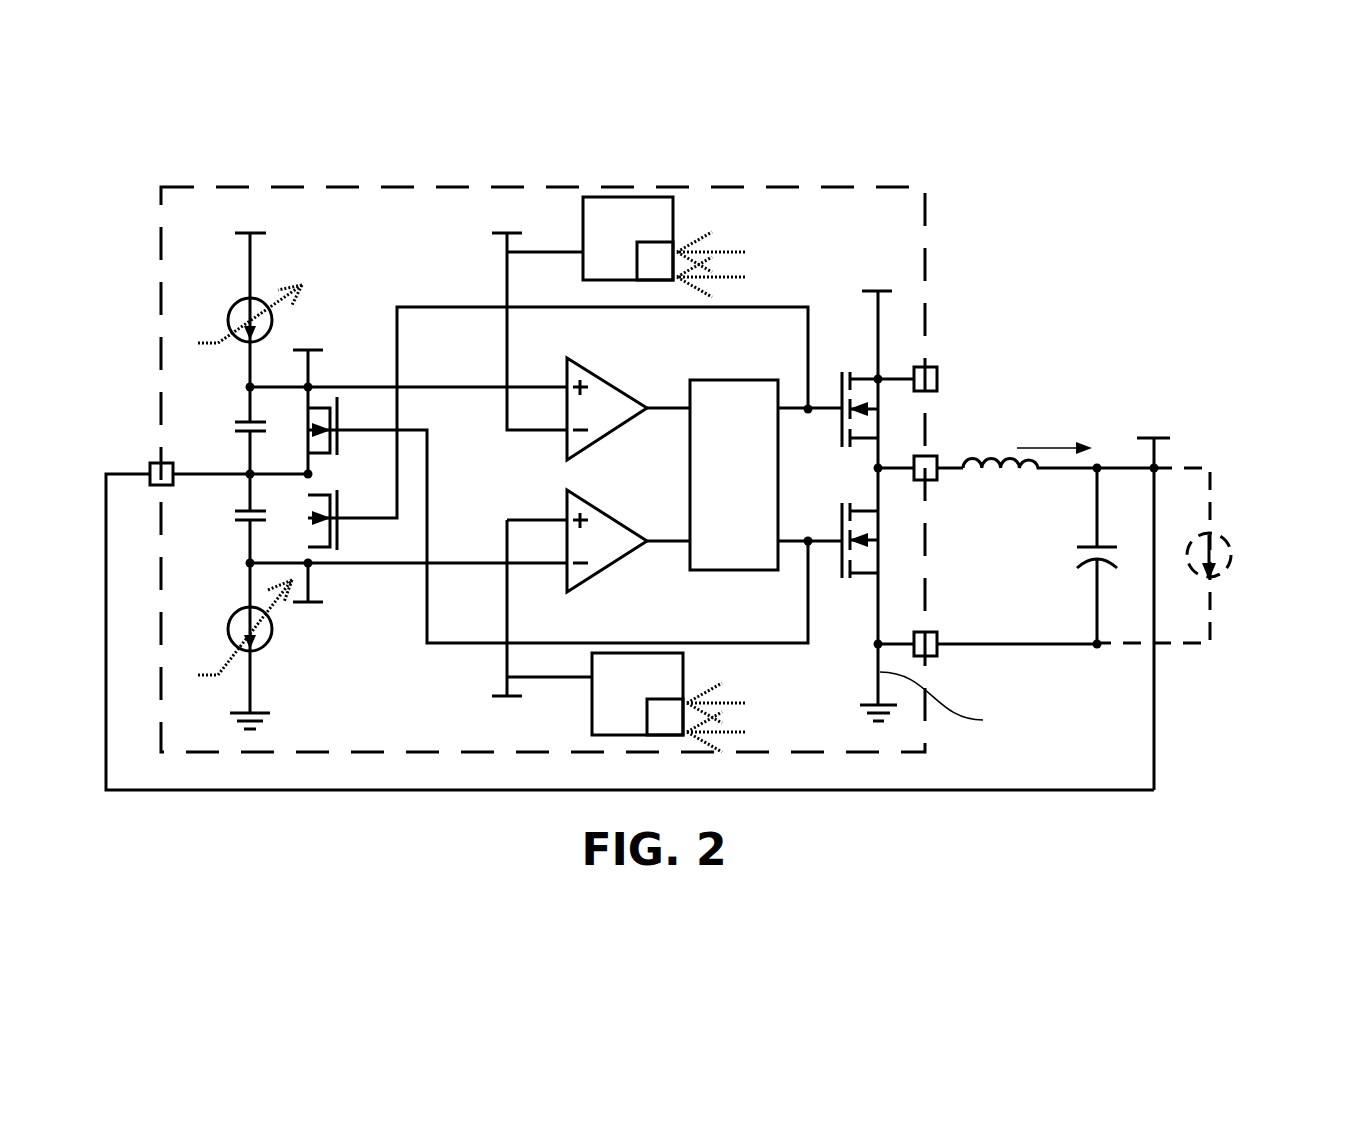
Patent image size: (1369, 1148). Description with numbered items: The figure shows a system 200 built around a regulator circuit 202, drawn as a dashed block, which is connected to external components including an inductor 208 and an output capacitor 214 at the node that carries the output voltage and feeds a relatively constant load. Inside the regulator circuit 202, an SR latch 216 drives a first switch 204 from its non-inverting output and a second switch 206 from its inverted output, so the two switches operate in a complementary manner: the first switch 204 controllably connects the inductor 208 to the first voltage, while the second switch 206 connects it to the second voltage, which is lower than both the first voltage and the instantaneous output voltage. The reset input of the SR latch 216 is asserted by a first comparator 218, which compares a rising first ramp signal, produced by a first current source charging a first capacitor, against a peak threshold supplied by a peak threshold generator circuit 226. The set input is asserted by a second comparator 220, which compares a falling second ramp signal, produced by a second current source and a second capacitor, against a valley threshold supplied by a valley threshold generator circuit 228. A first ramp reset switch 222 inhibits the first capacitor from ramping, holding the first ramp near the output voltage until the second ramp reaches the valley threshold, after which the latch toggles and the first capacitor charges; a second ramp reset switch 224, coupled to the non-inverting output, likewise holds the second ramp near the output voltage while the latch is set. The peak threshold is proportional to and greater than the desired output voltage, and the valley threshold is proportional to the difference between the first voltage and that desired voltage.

The system 200 is at (1000, 292).
The regulator circuit 202 is at (326, 187).
The first switch 204 is at (840, 372).
The second switch 206 is at (842, 560).
The inductor 208 is at (968, 460).
The capacitor 214 is at (1095, 528).
The SR latch 216 is at (714, 380).
The first comparator 218 is at (625, 388).
The second comparator 220 is at (617, 565).
The first ramp reset switch 222 is at (337, 407).
The second ramp reset switch 224 is at (338, 530).
The peak threshold generator circuit 226 is at (677, 247).
The valley threshold generator circuit 228 is at (685, 655).